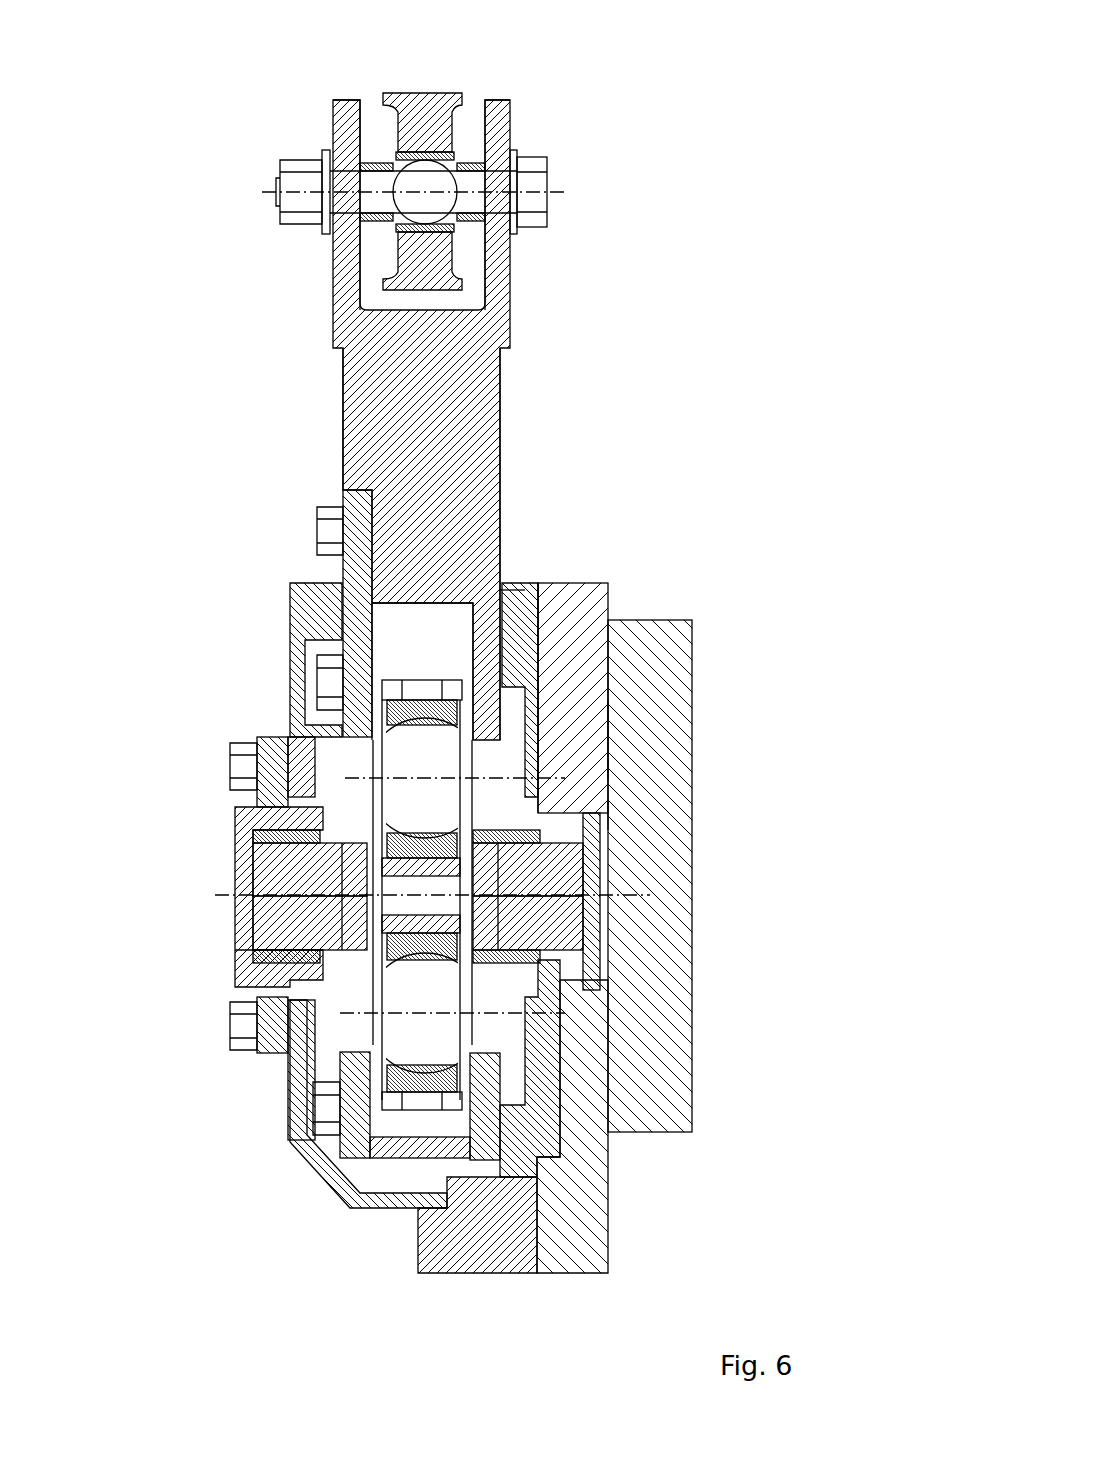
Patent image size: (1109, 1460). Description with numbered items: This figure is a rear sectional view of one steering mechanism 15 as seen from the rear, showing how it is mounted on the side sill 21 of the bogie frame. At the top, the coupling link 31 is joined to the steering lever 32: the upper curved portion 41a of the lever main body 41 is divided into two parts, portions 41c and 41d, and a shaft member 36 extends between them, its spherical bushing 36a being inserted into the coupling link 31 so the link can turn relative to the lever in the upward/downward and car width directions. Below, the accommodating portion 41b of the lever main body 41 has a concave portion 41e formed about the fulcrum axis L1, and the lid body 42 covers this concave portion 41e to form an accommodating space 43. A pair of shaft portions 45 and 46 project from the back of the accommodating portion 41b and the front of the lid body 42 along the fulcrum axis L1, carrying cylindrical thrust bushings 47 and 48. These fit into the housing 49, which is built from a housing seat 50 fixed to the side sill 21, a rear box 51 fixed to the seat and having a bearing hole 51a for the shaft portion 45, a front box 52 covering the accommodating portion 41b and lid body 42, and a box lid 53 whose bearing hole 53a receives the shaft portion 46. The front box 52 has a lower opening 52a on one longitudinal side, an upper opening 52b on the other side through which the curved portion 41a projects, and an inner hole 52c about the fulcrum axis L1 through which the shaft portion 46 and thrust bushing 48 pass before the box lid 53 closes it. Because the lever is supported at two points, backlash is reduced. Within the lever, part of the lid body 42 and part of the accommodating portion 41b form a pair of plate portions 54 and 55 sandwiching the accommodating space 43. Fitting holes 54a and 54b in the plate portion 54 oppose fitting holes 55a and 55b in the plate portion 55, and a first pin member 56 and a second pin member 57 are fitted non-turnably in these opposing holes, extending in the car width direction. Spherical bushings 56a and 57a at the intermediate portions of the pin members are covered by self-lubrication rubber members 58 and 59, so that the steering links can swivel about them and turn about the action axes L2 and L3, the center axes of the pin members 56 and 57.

The steering mechanism 15 is at (660, 88).
The side sill 21 is at (690, 620).
The coupling link 31 is at (420, 93).
The steering lever 32 is at (600, 362).
The shaft member 36 is at (478, 182).
The spherical bushing 36a is at (445, 162).
The lever main body 41 is at (560, 492).
The curved portion 41a is at (500, 422).
The accommodating portion 41b is at (522, 592).
The portion of the curved portion 41c is at (504, 99).
The portion of the curved portion 41d is at (350, 99).
The concave portion 41e is at (420, 605).
The lid body 42 is at (350, 572).
The accommodating space 43 is at (437, 648).
The shaft portion 45 is at (616, 812).
The shaft portion 46 is at (236, 832).
The thrust bushing 47 is at (618, 765).
The thrust bushing 48 is at (252, 848).
The housing 49 is at (670, 565).
The housing seat 50 is at (588, 1275).
The rear box 51 is at (490, 1275).
The bearing hole 51a is at (592, 940).
The front box 52 is at (390, 1215).
The opening 52a is at (450, 1190).
The opening 52b is at (503, 592).
The inner hole 52c is at (283, 760).
The box lid 53 is at (257, 1040).
The bearing hole 53a is at (252, 948).
The plate portion 54 is at (525, 650).
The fitting hole 54a is at (528, 869).
The fitting hole 54b is at (528, 923).
The plate portion 55 is at (332, 640).
The fitting hole 55a is at (313, 869).
The fitting hole 55b is at (313, 923).
The first pin member 56 is at (330, 740).
The spherical bushing 56a is at (545, 705).
The second pin member 57 is at (330, 1045).
The spherical bushing 57a is at (556, 1165).
The self-lubrication rubber member 58 is at (425, 700).
The self-lubrication rubber member 59 is at (415, 1112).
The fulcrum axis L1 is at (640, 895).
The action axis L2 is at (473, 749).
The action axis L3 is at (471, 1049).